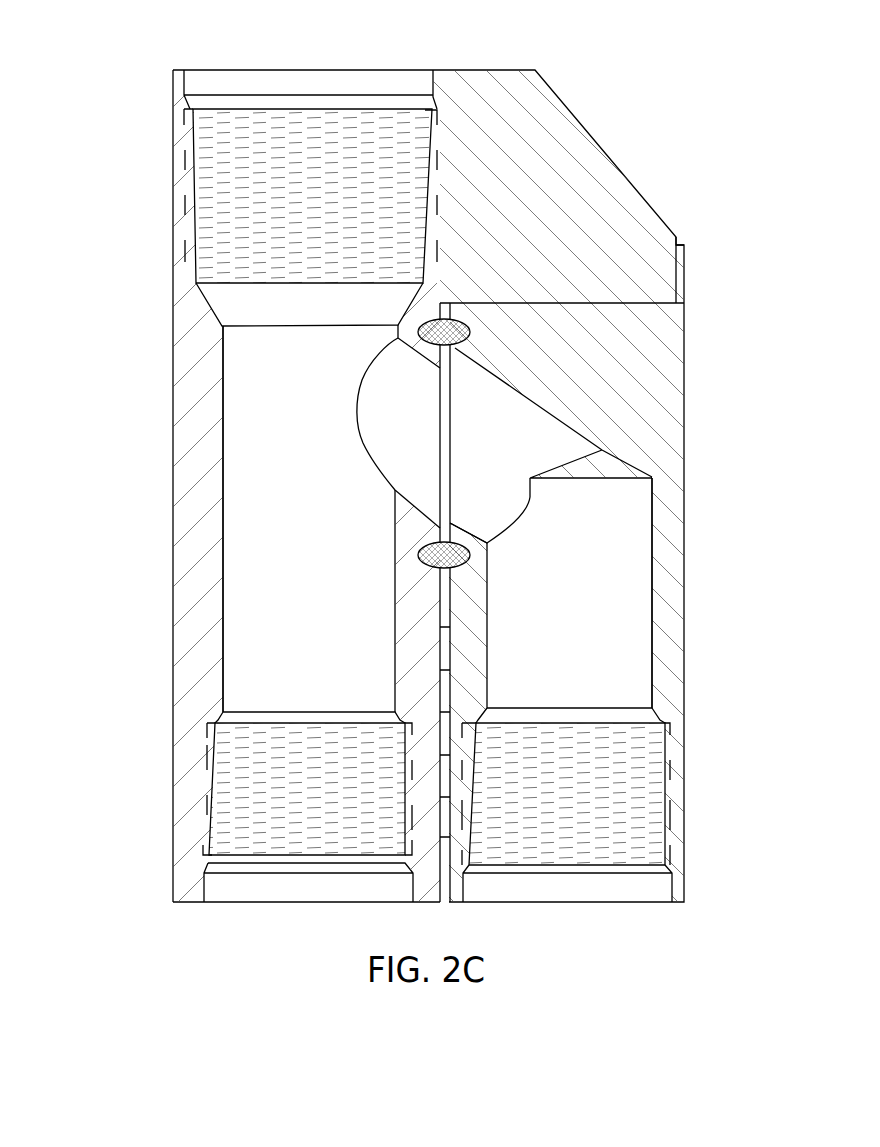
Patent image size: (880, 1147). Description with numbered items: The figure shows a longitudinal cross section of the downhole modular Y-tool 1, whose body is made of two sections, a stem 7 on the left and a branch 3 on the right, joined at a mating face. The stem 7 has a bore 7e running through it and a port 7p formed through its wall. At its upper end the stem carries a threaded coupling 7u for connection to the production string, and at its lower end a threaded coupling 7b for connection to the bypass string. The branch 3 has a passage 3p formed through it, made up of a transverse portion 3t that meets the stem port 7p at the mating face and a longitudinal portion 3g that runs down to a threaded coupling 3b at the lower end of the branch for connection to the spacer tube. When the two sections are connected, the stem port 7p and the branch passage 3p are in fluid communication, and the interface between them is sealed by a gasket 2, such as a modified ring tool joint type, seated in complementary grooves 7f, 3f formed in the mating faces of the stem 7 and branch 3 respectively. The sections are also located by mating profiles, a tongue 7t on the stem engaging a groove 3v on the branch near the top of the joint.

The downhole modular Y-tool 1 is at (84, 64).
The stem 7 is at (173, 450).
The threaded coupling 7u is at (292, 125).
The tongue 7t is at (643, 303).
The port 7p is at (418, 426).
The bore 7e is at (318, 583).
The groove 7f is at (426, 565).
The threaded coupling 7b is at (296, 845).
The branch 3 is at (684, 402).
The groove 3v is at (684, 270).
The transverse portion 3t is at (492, 470).
The groove 3f is at (469, 556).
The longitudinal portion 3g is at (581, 645).
The passage 3p is at (641, 580).
The threaded coupling 3b is at (563, 838).
The gasket 2 is at (446, 334).